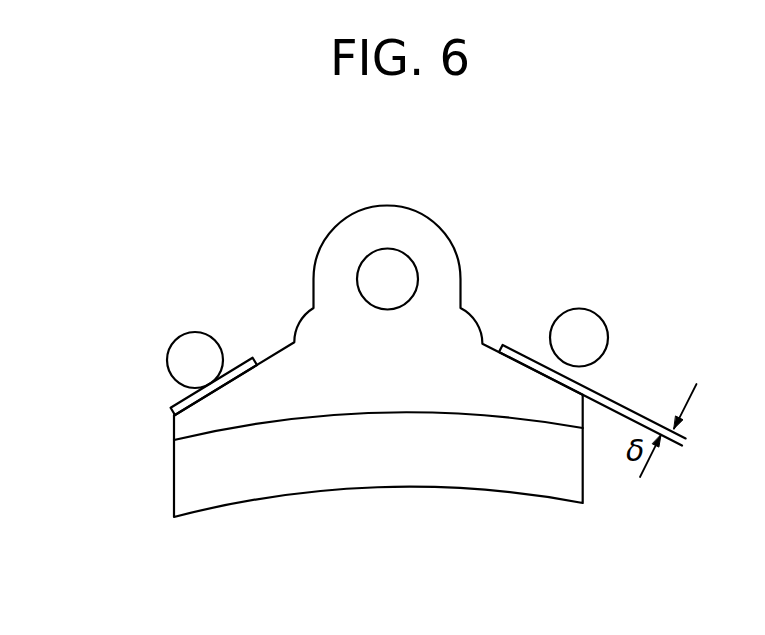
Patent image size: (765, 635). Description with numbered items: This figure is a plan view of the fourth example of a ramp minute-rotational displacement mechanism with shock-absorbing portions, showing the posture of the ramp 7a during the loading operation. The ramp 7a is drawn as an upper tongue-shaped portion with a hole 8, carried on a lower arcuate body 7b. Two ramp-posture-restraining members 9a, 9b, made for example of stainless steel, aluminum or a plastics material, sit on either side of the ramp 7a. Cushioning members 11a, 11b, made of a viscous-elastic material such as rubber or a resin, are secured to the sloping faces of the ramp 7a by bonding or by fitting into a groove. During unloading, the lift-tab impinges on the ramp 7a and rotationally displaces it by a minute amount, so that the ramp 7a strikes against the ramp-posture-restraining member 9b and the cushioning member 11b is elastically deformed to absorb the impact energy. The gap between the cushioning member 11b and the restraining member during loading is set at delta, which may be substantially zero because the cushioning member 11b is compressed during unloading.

The ramp 7a is at (450, 240).
The lower base portion of arm 7b is at (367, 467).
The hole 8 is at (382, 270).
The ramp-posture-restraining member 9a is at (187, 333).
The ramp-posture-restraining member 9b is at (578, 328).
The cushioning member 11a is at (174, 403).
The cushioning member 11b is at (513, 345).